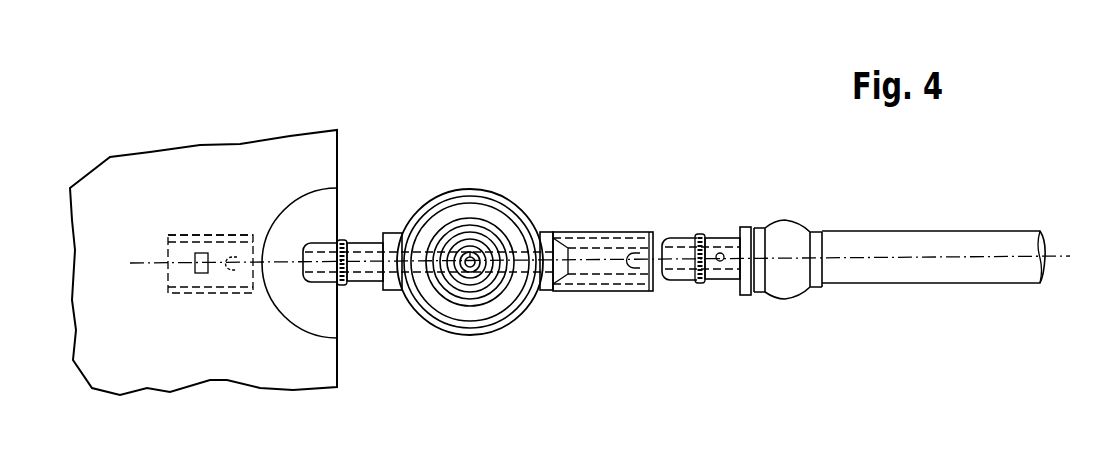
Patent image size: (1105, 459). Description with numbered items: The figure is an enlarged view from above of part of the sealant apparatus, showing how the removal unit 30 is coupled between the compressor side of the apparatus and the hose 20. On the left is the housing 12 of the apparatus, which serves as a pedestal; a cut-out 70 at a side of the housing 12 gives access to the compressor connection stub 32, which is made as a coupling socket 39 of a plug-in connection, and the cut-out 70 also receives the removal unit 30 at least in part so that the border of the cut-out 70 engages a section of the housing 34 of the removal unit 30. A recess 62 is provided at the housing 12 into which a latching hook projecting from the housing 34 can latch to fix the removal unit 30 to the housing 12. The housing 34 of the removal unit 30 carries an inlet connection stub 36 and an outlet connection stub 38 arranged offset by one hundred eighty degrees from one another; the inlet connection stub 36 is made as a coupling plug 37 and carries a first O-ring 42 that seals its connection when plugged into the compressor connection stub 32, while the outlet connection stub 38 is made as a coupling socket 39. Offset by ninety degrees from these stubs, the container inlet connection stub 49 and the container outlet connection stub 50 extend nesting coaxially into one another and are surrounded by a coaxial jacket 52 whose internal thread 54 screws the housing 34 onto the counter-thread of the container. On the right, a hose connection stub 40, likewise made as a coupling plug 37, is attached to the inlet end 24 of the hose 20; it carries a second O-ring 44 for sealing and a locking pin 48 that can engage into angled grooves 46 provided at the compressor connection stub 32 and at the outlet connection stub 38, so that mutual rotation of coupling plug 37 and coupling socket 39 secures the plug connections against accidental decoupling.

The housing 12 is at (137, 177).
The hose 20 is at (925, 238).
The inlet end 24 is at (781, 215).
The removal unit 30 is at (463, 338).
The compressor connection stub 32 is at (205, 292).
The housing 34 is at (545, 234).
The inlet connection stub 36 is at (363, 283).
The coupling plug 37 is at (307, 241).
The outlet connection stub 38 is at (590, 292).
The coupling socket 39 is at (222, 230).
The hose connection stub 40 is at (725, 281).
The first O-ring 42 is at (343, 239).
The second O-ring 44 is at (699, 285).
The angled grooves 46 is at (233, 270).
The locking pin 48 is at (722, 253).
The container inlet connection stub 49 is at (472, 250).
The container outlet connection stub 50 is at (495, 288).
The jacket 52 is at (521, 210).
The internal thread 54 is at (433, 218).
The recess 62 is at (195, 265).
The cut-out 70 is at (293, 320).